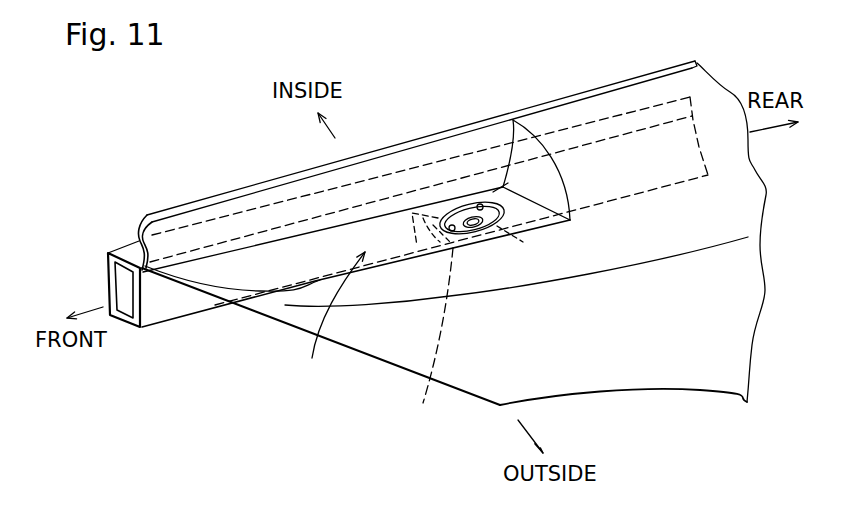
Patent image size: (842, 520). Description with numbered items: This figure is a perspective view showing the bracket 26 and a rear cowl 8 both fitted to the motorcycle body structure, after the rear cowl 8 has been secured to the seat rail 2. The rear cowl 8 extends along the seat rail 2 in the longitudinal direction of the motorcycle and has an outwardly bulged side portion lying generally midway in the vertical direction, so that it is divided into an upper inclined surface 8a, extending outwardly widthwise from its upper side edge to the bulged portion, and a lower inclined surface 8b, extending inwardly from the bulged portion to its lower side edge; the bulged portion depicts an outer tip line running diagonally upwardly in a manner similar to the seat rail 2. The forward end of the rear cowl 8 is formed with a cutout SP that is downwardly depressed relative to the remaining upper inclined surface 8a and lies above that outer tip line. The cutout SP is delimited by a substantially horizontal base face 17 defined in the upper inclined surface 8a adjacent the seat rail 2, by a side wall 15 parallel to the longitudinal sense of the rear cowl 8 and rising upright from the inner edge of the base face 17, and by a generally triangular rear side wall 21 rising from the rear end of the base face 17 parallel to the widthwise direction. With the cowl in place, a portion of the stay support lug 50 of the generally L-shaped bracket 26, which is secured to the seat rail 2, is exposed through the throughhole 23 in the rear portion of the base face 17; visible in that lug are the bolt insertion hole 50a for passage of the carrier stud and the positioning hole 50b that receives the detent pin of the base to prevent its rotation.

The seat rail 2 is at (133, 248).
The side wall 15 is at (413, 158).
The rear side wall 21 is at (508, 192).
The stay support lug 50 is at (506, 210).
The bolt insertion hole 50a is at (472, 218).
The positioning hole 50b is at (452, 228).
The throughhole 23 is at (481, 207).
The rear cowl 8 is at (475, 234).
The upper inclined surface 8a is at (546, 281).
The lower inclined surface 8b is at (728, 348).
The base face 17 is at (297, 263).
The bracket 26 is at (428, 340).
The cutout SP is at (330, 320).